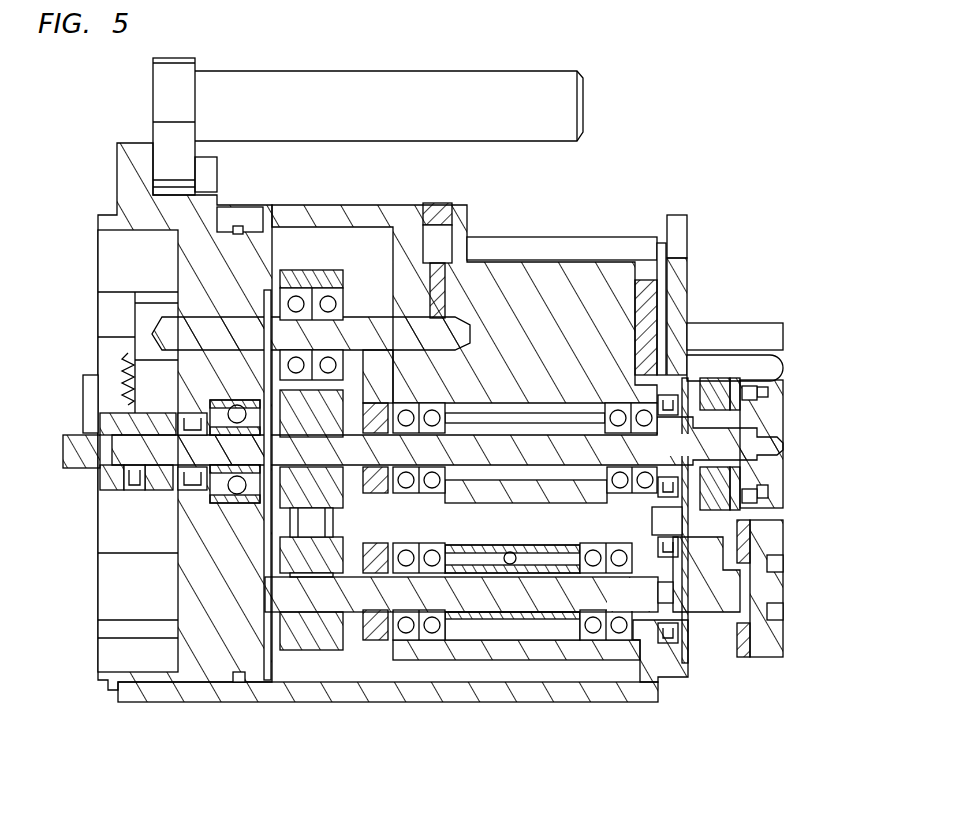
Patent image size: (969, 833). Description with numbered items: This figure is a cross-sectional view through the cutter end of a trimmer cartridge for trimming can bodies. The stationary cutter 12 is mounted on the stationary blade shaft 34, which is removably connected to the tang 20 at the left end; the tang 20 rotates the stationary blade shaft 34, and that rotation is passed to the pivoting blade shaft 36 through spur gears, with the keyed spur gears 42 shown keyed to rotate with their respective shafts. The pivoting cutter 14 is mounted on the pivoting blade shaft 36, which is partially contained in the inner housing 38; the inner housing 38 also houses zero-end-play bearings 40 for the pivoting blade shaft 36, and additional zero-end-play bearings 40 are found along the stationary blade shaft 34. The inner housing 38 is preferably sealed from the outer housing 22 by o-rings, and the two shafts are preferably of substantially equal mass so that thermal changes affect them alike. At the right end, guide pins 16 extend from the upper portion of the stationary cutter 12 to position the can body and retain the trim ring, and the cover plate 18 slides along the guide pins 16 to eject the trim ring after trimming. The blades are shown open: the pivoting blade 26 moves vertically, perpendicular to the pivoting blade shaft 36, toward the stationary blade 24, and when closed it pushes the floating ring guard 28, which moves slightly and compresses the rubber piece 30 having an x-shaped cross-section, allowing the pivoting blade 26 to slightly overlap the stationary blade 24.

The stationary cutter 12 is at (793, 412).
The pivoting cutter 14 is at (795, 633).
The guide pins 16 is at (780, 331).
The cover plate 18 is at (683, 234).
The tang 20 is at (63, 460).
The outer housing 22 is at (118, 690).
The stationary blade 24 is at (737, 512).
The pivoting blade 26 is at (735, 548).
The floating ring guard 28 is at (742, 500).
The rubber piece 30 is at (766, 472).
The stationary blade shaft 34 is at (688, 457).
The pivoting blade shaft 36 is at (640, 606).
The inner housing 38 is at (650, 684).
The zero-end-play bearings 40 is at (407, 548).
The keyed spur gears 42 is at (265, 570).